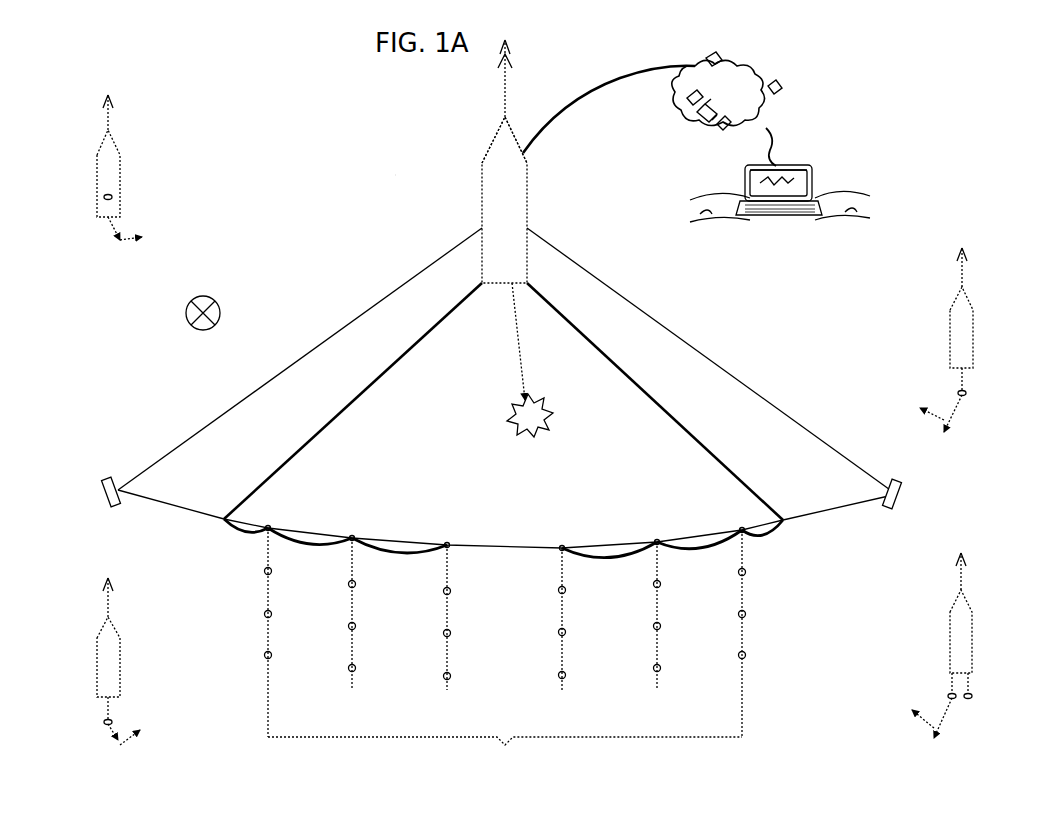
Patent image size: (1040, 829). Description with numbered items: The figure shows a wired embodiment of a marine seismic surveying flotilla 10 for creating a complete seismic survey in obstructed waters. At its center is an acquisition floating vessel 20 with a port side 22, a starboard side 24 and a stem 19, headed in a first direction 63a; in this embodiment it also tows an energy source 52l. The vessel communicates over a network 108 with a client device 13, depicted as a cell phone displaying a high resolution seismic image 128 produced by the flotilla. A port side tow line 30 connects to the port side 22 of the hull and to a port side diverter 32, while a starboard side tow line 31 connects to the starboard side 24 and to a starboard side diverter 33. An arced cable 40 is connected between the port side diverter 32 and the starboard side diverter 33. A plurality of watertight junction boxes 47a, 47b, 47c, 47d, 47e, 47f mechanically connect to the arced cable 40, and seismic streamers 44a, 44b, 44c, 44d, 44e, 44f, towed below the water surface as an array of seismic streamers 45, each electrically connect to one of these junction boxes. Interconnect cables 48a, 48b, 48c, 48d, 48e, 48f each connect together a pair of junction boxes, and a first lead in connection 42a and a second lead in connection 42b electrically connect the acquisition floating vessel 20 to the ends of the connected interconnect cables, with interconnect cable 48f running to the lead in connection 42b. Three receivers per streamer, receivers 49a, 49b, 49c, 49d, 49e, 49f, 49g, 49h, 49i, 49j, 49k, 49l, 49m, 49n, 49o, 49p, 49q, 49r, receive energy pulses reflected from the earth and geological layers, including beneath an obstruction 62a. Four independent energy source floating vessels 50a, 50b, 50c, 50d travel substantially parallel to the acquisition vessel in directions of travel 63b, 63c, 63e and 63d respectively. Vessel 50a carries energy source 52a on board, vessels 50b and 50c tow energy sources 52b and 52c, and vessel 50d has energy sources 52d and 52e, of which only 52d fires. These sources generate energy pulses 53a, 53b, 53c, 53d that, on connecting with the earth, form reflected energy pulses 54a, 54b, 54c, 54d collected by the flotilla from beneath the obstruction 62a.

The marine seismic surveying flotilla 10 is at (397, 177).
The client device 13 is at (822, 178).
The stem 19 is at (516, 286).
The acquisition floating vessel 20 is at (540, 200).
The port side 22 is at (486, 175).
The starboard side 24 is at (529, 167).
The port side tow line 30 is at (363, 297).
The starboard side tow line 31 is at (639, 297).
The port side diverter 32 is at (108, 505).
The starboard side diverter 33 is at (899, 502).
The arced cable 40 is at (514, 554).
The first lead in connection 42a is at (347, 393).
The second lead in connection 42b is at (715, 440).
The seismic streamer 44a is at (269, 632).
The seismic streamer 44b is at (354, 625).
The seismic streamer 44c is at (447, 633).
The seismic streamer 44d is at (566, 637).
The seismic streamer 44e is at (661, 628).
The seismic streamer 44f is at (742, 633).
The array of seismic streamers 45 is at (505, 756).
The watertight junction box 47a is at (268, 528).
The watertight junction box 47b is at (352, 521).
The watertight junction box 47c is at (447, 529).
The watertight junction box 47d is at (562, 548).
The watertight junction box 47e is at (657, 542).
The watertight junction box 47f is at (742, 530).
The interconnect cable 48a is at (256, 530).
The interconnect cable 48b is at (352, 539).
The interconnect cable 48c is at (408, 551).
The interconnect cable 48d is at (600, 557).
The interconnect cable 48e is at (696, 549).
The interconnect cable 48f is at (765, 530).
The receiver 49a is at (265, 570).
The receiver 49b is at (265, 613).
The receiver 49c is at (265, 655).
The receiver 49d is at (349, 583).
The receiver 49e is at (349, 625).
The receiver 49f is at (349, 667).
The receiver 49g is at (443, 590).
The receiver 49h is at (443, 632).
The receiver 49i is at (443, 675).
The receiver 49j is at (746, 572).
The receiver 49k is at (746, 613).
The receiver 49l is at (746, 654).
The receiver 49m is at (661, 584).
The receiver 49n is at (661, 625).
The receiver 49o is at (661, 669).
The receiver 49p is at (566, 589).
The receiver 49q is at (566, 631).
The receiver 49r is at (566, 674).
The independent energy source floating vessel 50a is at (119, 168).
The independent energy source floating vessel 50b is at (119, 662).
The independent energy source floating vessel 50c is at (974, 318).
The independent energy source floating vessel 50d is at (969, 638).
The energy source 52a is at (105, 201).
The energy source 52b is at (102, 717).
The energy source 52c is at (967, 395).
The energy source 52d is at (956, 697).
The energy source 52e is at (972, 696).
The energy source 52l is at (509, 406).
The energy pulses 53a is at (115, 232).
The energy pulses 53b is at (117, 741).
The energy pulses 53c is at (961, 422).
The energy pulse 53d is at (936, 734).
The reflected energy pulses 54a is at (143, 228).
The reflected energy pulse 54b is at (145, 742).
The reflected energy pulse 54c is at (924, 416).
The reflected energy pulse 54d is at (914, 718).
The obstruction 62a is at (187, 304).
The first direction 63a is at (506, 71).
The direction of travel 63b is at (108, 99).
The direction of travel 63c is at (108, 584).
The direction of travel 63d is at (961, 556).
The direction of travel 63e is at (964, 253).
The network 108 is at (755, 61).
The high resolution seismic image 128 is at (797, 159).